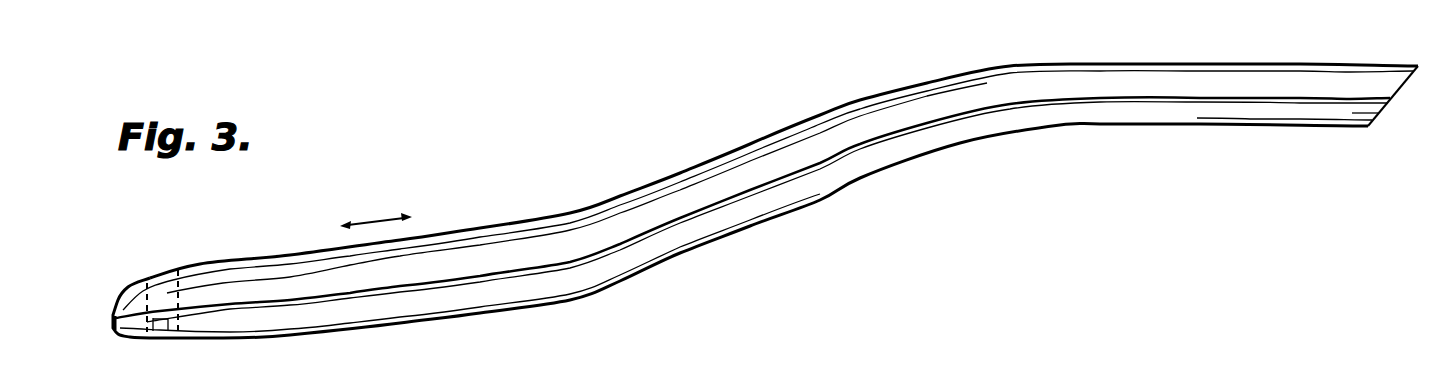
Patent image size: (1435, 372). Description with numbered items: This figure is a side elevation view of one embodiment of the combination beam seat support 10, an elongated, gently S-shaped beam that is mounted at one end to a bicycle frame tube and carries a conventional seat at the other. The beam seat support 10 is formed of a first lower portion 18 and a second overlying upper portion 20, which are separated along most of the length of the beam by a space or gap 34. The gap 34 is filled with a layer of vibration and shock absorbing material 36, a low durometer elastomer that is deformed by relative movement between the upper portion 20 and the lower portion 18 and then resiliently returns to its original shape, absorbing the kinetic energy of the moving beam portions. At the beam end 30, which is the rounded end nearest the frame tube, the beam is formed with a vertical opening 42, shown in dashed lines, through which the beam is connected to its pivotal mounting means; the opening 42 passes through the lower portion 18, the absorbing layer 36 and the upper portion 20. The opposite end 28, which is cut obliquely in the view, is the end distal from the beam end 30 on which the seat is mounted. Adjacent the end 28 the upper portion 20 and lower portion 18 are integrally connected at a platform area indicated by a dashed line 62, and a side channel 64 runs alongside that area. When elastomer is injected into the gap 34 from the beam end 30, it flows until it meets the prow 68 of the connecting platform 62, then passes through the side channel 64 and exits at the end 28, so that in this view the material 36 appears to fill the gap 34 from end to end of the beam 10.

The combination beam seat support 10 is at (709, 132).
The first lower portion 18 is at (650, 263).
The second overlying upper portion 20 is at (903, 88).
The end 28 is at (1354, 135).
The beam end 30 is at (133, 280).
The gap 34 is at (103, 325).
The vibration and shock absorbing material 36 is at (337, 294).
The vertical opening 42 is at (178, 270).
The platform area 62 is at (374, 220).
The side channel 64 is at (1077, 97).
The prow 68 is at (930, 359).